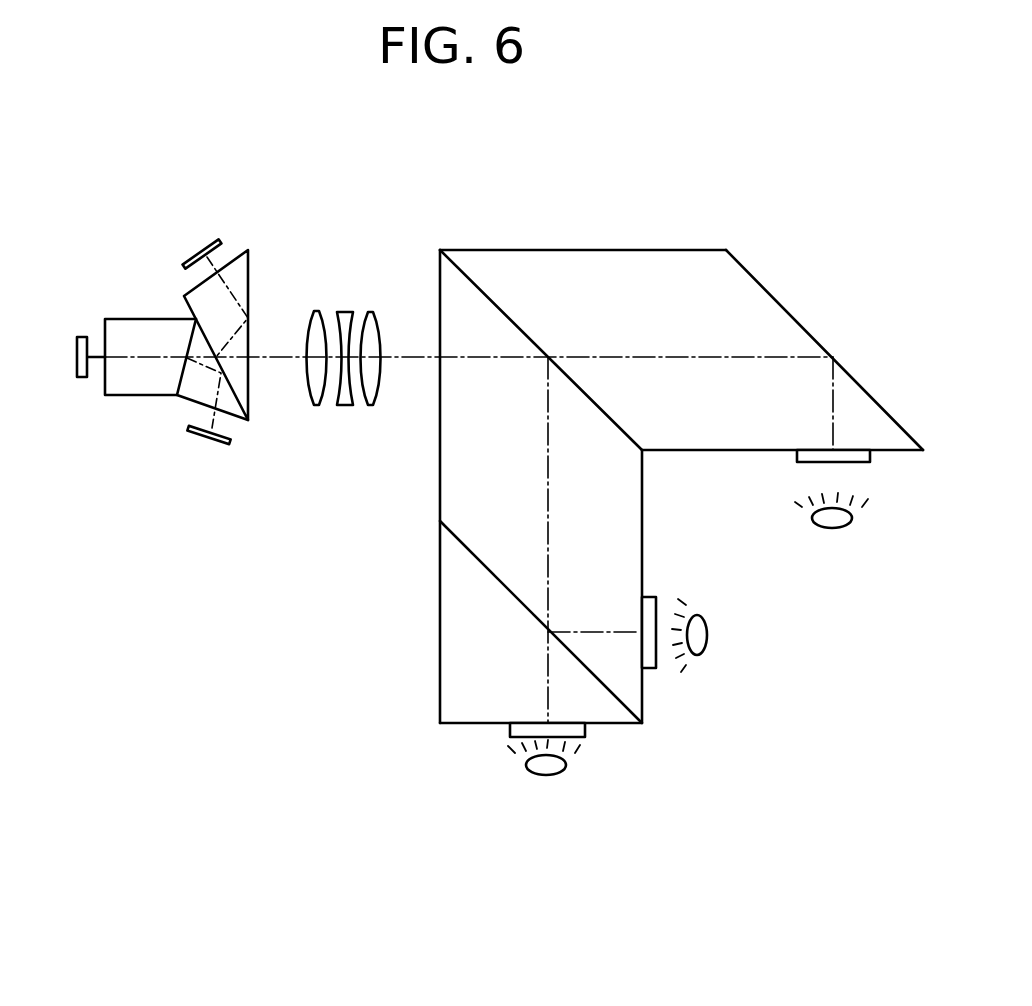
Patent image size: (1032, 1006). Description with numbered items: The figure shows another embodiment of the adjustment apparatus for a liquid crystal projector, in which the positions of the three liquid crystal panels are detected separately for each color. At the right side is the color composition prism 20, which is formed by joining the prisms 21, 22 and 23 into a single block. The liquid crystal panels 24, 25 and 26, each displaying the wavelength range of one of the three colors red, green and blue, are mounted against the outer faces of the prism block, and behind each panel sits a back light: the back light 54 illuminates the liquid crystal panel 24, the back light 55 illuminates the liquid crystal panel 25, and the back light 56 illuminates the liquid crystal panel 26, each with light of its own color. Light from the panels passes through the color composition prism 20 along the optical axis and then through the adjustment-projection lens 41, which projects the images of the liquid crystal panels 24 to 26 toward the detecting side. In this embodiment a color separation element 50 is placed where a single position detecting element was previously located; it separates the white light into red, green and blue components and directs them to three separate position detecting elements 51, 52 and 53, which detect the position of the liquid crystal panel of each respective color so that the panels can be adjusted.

The color composition prism 20 is at (565, 226).
The prism 21 is at (782, 318).
The prism 22 is at (442, 277).
The prism 23 is at (447, 622).
The liquid crystal panel 24 is at (873, 457).
The liquid crystal panel 25 is at (651, 597).
The liquid crystal panel 26 is at (508, 728).
The adjustment-projection lens 41 is at (395, 306).
The color separation element 50 is at (193, 392).
The position detecting element 51 is at (217, 242).
The position detecting element 52 is at (210, 446).
The position detecting element 53 is at (82, 335).
The back light 54 is at (840, 530).
The back light 55 is at (710, 627).
The back light 56 is at (546, 777).